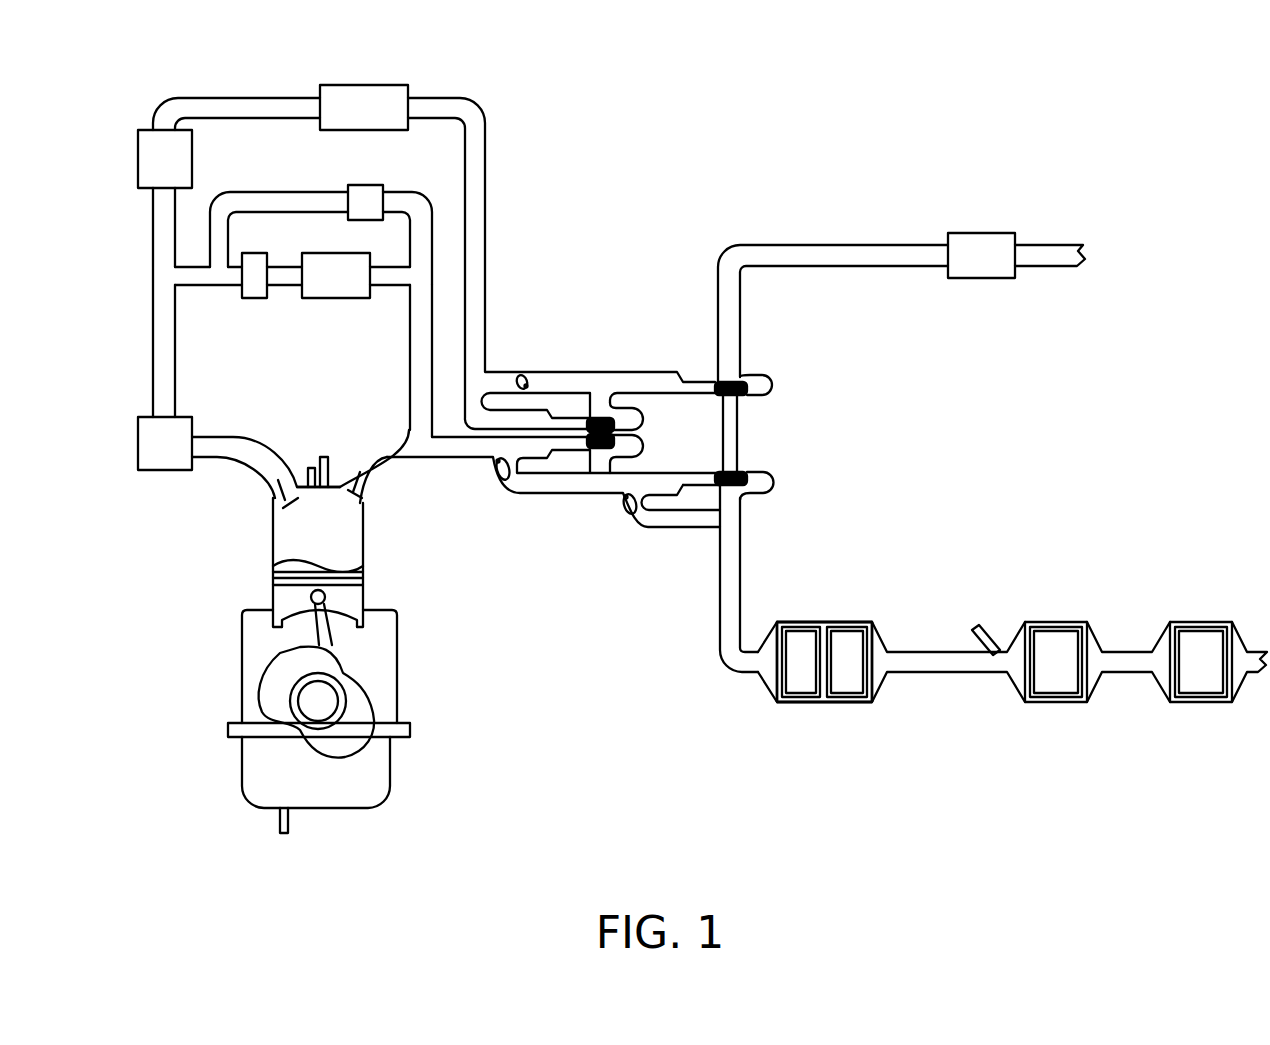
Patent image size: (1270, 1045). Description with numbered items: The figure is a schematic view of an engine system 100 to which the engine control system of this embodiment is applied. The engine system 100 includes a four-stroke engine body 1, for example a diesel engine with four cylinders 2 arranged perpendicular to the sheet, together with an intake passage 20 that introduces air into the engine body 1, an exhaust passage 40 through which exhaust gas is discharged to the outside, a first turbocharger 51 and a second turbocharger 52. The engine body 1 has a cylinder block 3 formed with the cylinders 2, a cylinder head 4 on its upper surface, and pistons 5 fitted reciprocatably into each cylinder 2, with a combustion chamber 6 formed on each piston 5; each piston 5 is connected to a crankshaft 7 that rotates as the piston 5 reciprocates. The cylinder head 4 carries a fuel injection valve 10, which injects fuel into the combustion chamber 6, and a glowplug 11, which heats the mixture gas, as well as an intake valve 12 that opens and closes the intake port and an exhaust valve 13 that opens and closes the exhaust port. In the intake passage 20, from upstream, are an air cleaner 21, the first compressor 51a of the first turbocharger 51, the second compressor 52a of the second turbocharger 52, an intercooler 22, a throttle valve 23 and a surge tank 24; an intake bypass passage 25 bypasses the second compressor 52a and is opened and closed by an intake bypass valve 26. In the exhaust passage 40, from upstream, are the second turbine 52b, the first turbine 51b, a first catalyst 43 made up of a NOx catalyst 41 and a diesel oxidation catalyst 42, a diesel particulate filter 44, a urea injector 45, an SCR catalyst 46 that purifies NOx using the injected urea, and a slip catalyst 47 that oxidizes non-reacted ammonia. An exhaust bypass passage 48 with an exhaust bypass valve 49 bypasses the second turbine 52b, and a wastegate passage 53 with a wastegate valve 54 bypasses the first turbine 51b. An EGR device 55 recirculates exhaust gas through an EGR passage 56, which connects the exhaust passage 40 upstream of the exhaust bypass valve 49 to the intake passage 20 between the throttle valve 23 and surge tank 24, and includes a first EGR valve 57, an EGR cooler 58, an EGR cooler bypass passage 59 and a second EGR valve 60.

The engine body 1 is at (207, 757).
The cylinder 2 is at (363, 545).
The cylinder block 3 is at (363, 597).
The cylinder head 4 is at (370, 500).
The piston 5 is at (273, 597).
The combustion chamber 6 is at (303, 542).
The crankshaft 7 is at (318, 703).
The fuel injection valve 10 is at (325, 456).
The glowplug 11 is at (308, 466).
The intake valve 12 is at (272, 495).
The exhaust valve 13 is at (365, 484).
The intake passage 20 is at (797, 210).
The air cleaner 21 is at (982, 233).
The intercooler 22 is at (355, 88).
The throttle valve 23 is at (138, 152).
The surge tank 24 is at (138, 447).
The intake bypass passage 25 is at (580, 372).
The intake bypass valve 26 is at (523, 377).
The exhaust passage 40 is at (946, 582).
The NOx catalyst 41 is at (792, 712).
The diesel oxidation catalyst 42 is at (824, 662).
The first catalyst 43 is at (793, 690).
The diesel particulate filter 44 is at (852, 690).
The urea injector 45 is at (975, 628).
The selective catalytic reduction catalyst 46 is at (1057, 690).
The slip catalyst 47 is at (1205, 690).
The exhaust bypass passage 48 is at (560, 485).
The exhaust bypass valve 49 is at (500, 480).
The first turbocharger 51 is at (786, 410).
The first compressor 51a is at (760, 375).
The first turbine 51b is at (762, 480).
The second turbocharger 52 is at (651, 437).
The second compressor 52a is at (640, 418).
The second turbine 52b is at (598, 450).
The wastegate passage 53 is at (692, 527).
The wastegate valve 54 is at (630, 514).
The EGR device 55 is at (290, 305).
The EGR passage 56 is at (418, 358).
The first EGR valve 57 is at (258, 298).
The EGR cooler 58 is at (338, 298).
The EGR cooler bypass passage 59 is at (276, 192).
The second EGR valve 60 is at (380, 188).
The engine system 100 is at (1110, 105).